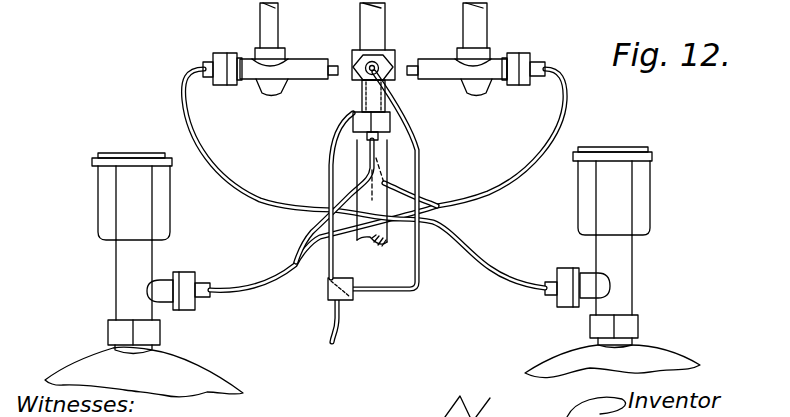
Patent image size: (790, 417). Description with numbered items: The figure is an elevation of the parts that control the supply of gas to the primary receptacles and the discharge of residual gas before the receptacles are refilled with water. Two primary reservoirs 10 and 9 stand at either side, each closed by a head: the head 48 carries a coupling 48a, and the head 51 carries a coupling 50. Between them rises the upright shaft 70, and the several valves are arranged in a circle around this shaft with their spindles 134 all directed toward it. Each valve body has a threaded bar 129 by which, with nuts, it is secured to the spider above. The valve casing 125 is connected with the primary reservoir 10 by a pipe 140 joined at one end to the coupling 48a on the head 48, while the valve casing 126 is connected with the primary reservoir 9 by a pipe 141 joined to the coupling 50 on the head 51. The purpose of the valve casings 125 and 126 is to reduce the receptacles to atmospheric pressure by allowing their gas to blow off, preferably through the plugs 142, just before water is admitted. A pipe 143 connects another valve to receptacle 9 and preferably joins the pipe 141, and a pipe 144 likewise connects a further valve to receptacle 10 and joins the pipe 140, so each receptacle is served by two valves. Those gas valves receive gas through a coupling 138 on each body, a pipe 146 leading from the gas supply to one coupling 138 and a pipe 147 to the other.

The primary reservoir 9 is at (560, 360).
The primary reservoir 10 is at (193, 372).
The head 48 is at (102, 253).
The coupling 48a is at (193, 282).
The coupling 50 is at (566, 268).
The head 51 is at (650, 216).
The upright shaft 70 is at (360, 241).
The valve casing 125 is at (520, 83).
The valve casing 126 is at (226, 85).
The threaded bar 129 is at (262, 23).
The spindle 134 is at (333, 65).
The coupling 138 is at (392, 56).
The pipe 140 is at (273, 280).
The pipe 141 is at (387, 192).
The plug 142 is at (266, 96).
The pipe 143 is at (408, 187).
The pipe 144 is at (342, 192).
The pipe 146 is at (328, 157).
The pipe 147 is at (399, 297).